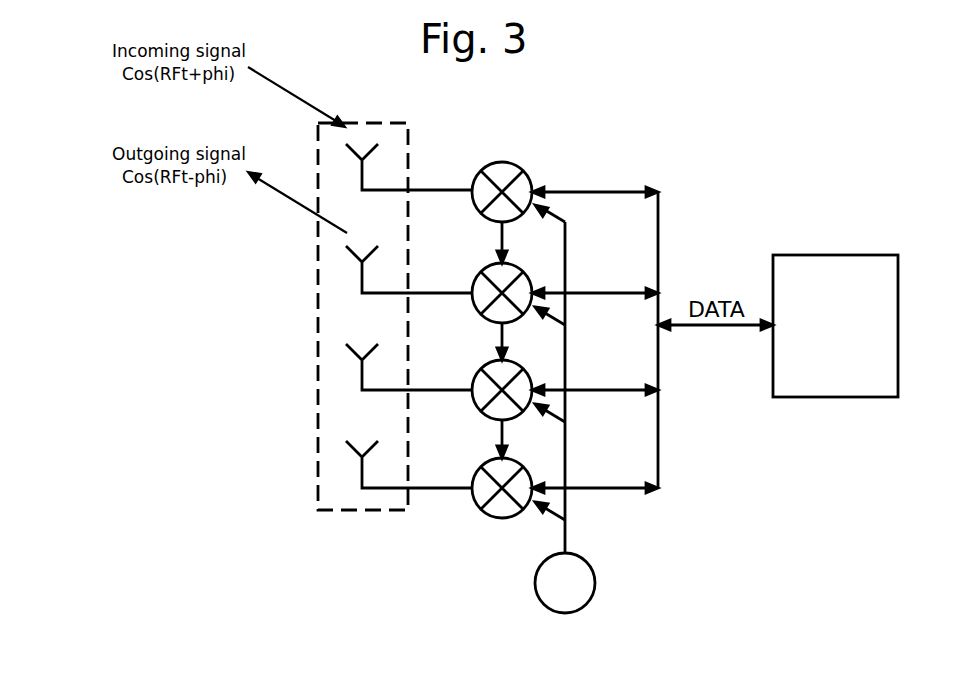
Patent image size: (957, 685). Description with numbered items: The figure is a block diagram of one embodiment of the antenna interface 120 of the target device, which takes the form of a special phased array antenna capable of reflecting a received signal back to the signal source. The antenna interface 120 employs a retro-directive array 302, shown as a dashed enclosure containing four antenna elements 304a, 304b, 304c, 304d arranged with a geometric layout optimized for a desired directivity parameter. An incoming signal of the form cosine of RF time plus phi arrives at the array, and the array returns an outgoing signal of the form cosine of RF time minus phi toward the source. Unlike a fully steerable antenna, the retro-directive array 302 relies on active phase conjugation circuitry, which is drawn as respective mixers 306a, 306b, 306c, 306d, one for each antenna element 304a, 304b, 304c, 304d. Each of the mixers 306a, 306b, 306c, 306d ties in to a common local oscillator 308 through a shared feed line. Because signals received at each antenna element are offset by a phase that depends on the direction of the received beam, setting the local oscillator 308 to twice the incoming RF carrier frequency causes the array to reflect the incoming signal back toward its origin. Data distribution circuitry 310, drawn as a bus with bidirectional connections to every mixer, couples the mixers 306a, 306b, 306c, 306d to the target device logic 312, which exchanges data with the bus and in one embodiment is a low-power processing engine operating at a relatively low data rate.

The antenna interface 120 is at (80, 79).
The retro-directive array 302 is at (318, 358).
The antenna element 304a is at (377, 148).
The antenna element 304b is at (377, 250).
The antenna element 304c is at (377, 348).
The antenna element 304d is at (377, 445).
The mixer 306a is at (515, 165).
The mixer 306b is at (515, 266).
The mixer 306c is at (515, 363).
The mixer 306d is at (515, 461).
The local oscillator 308 is at (535, 583).
The data distribution circuitry 310 is at (660, 228).
The target device logic 312 is at (835, 326).